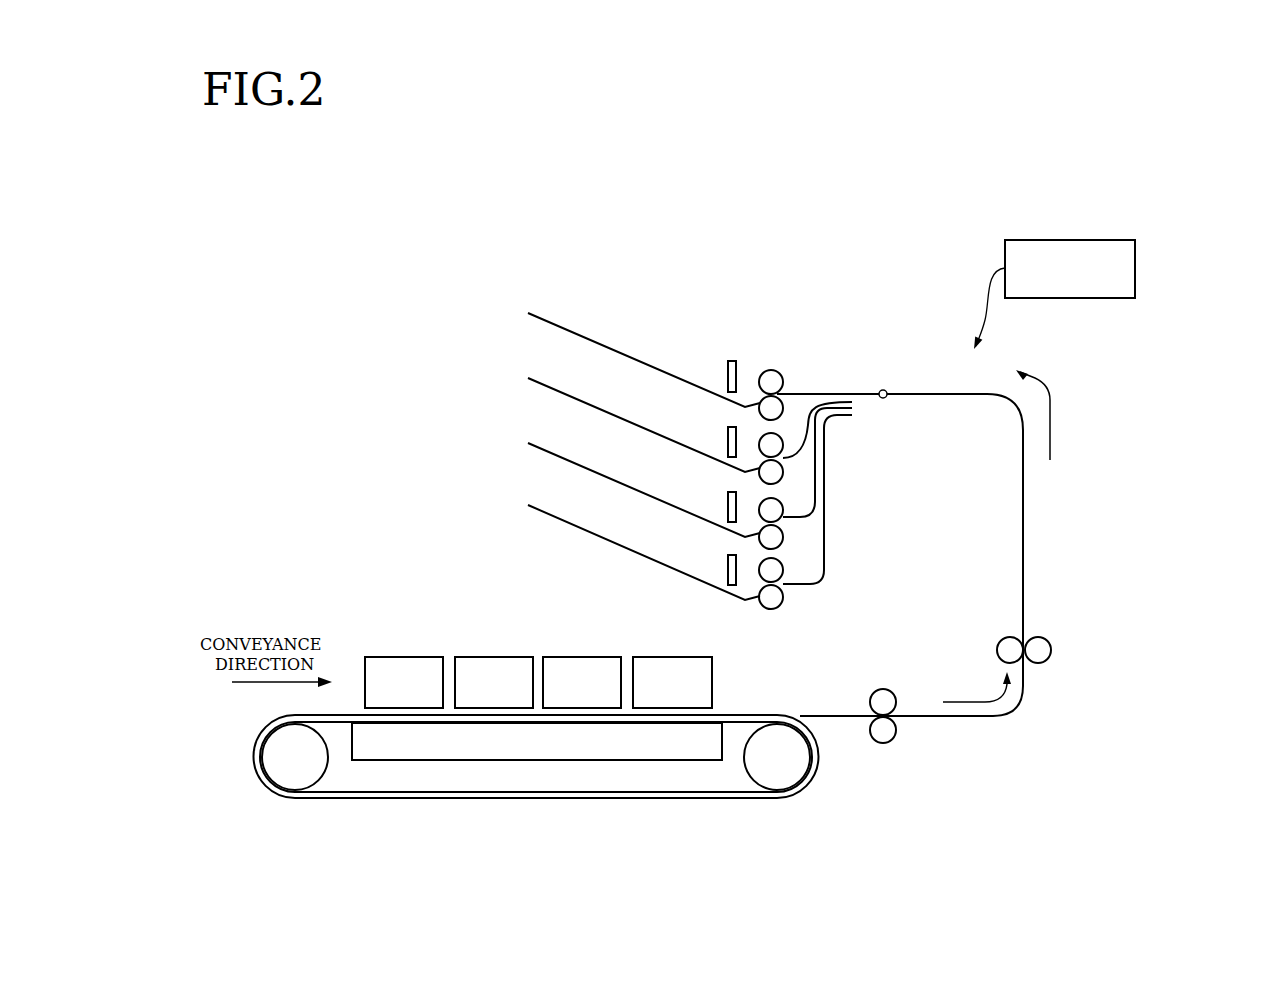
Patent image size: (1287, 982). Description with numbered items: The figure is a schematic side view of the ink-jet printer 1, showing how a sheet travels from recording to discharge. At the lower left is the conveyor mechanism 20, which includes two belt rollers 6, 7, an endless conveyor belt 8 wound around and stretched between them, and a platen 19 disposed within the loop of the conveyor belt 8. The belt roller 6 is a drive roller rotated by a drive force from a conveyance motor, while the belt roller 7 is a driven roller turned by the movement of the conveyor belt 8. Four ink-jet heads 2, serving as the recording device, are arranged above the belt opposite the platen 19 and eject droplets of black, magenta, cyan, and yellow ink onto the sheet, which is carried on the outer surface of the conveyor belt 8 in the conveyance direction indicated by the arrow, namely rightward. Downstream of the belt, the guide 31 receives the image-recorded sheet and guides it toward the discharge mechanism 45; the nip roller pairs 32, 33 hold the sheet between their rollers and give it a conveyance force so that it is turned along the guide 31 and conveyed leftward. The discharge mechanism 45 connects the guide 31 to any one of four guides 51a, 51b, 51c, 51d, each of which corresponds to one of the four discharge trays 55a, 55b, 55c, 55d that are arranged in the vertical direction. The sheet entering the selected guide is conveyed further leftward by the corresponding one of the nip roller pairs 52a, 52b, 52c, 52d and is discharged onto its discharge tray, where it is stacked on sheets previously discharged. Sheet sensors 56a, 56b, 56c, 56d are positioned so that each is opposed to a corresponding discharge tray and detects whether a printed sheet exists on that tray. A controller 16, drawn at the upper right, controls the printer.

The ink-jet printer 1 is at (1173, 160).
The ink-jet head 2 is at (407, 668).
The belt roller 6 is at (790, 762).
The belt roller 7 is at (285, 773).
The conveyor belt 8 is at (705, 799).
The controller 16 is at (1117, 240).
The platen 19 is at (518, 740).
The conveyor mechanism 20 is at (355, 850).
The guide 31 is at (960, 717).
The nip roller pair 32 is at (882, 744).
The nip roller pair 33 is at (1037, 664).
The discharge mechanism 45 is at (883, 390).
The guide 51a is at (830, 394).
The guide 51b is at (824, 421).
The guide 51c is at (815, 483).
The guide 51d is at (824, 570).
The nip roller pair 52a is at (771, 370).
The nip roller pair 52b is at (776, 433).
The nip roller pair 52c is at (768, 598).
The nip roller pair 52d is at (770, 602).
The discharge tray 55a is at (602, 345).
The discharge tray 55b is at (623, 418).
The discharge tray 55c is at (583, 467).
The discharge tray 55d is at (622, 546).
The sheet sensor 56a is at (728, 371).
The sheet sensor 56b is at (728, 434).
The sheet sensor 56c is at (728, 500).
The sheet sensor 56d is at (728, 564).